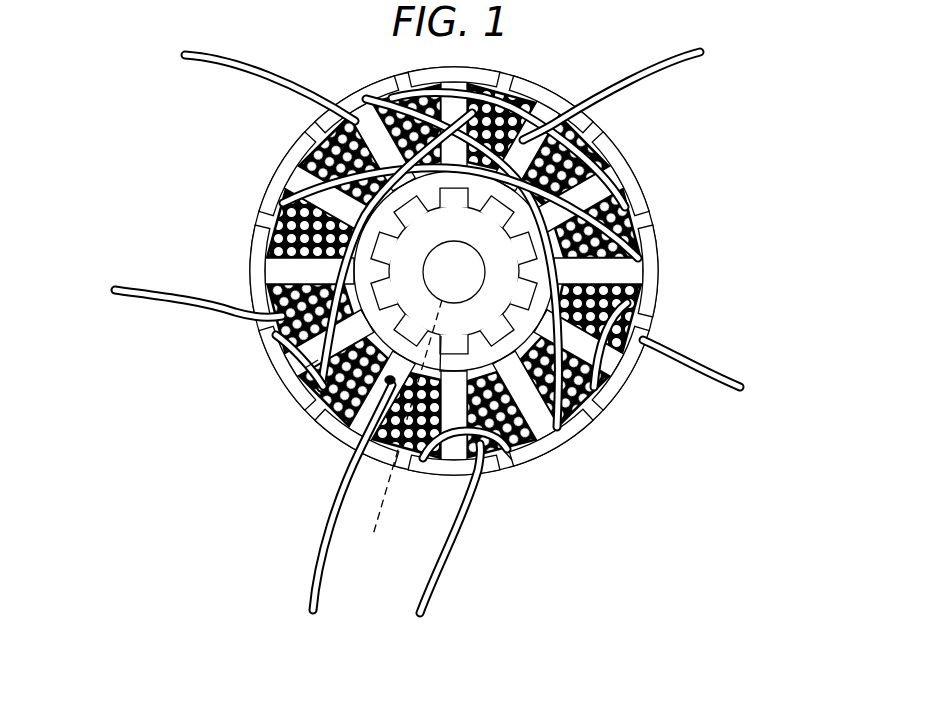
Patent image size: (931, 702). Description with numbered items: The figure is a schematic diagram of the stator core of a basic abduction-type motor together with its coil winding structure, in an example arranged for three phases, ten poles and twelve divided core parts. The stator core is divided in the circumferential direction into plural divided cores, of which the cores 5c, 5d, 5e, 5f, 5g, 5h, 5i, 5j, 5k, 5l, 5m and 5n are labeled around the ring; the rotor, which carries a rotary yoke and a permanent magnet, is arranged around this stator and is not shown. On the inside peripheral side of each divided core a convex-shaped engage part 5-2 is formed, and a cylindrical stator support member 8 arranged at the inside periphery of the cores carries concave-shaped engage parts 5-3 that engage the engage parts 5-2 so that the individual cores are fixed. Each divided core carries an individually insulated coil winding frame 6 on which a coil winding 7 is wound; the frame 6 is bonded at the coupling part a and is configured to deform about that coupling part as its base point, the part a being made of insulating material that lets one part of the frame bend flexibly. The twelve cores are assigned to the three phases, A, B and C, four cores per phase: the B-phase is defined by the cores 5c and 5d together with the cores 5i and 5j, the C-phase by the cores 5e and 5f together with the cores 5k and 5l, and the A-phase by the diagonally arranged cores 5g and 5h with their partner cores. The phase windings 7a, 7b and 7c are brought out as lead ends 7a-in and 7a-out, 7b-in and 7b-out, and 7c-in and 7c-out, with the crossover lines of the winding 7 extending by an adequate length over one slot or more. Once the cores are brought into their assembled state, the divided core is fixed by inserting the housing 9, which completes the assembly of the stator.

The divided core 5c is at (302, 271).
The divided core 5d is at (314, 180).
The divided core 5e is at (363, 131).
The divided core 5f is at (454, 119).
The divided core 5g is at (544, 131).
The divided core 5h is at (594, 180).
The divided core 5i is at (606, 271).
The divided core 5j is at (594, 361).
The divided core 5k is at (544, 411).
The divided core 5l is at (454, 423).
The stator pole 5m is at (363, 411).
The stator pole 5n is at (368, 302).
The convex-shaped engage part 5-2 is at (443, 368).
The concave-shaped engage part 5-3 is at (384, 311).
The coil winding frame 6 is at (305, 368).
The coil winding 7 is at (345, 424).
The phase a winding 7a is at (248, 362).
The phase b winding 7b is at (449, 176).
The phase c winding 7c is at (543, 264).
The phase a input lead 7a-in is at (307, 587).
The phase a output lead 7a-out is at (649, 96).
The phase b input lead 7b-in is at (189, 311).
The phase b output lead 7b-out is at (734, 381).
The phase c input lead 7c-in is at (349, 241).
The phase c output lead 7c-out is at (416, 610).
The stator support member 8 is at (402, 245).
The housing 9 is at (510, 458).
The coupling part a is at (322, 412).